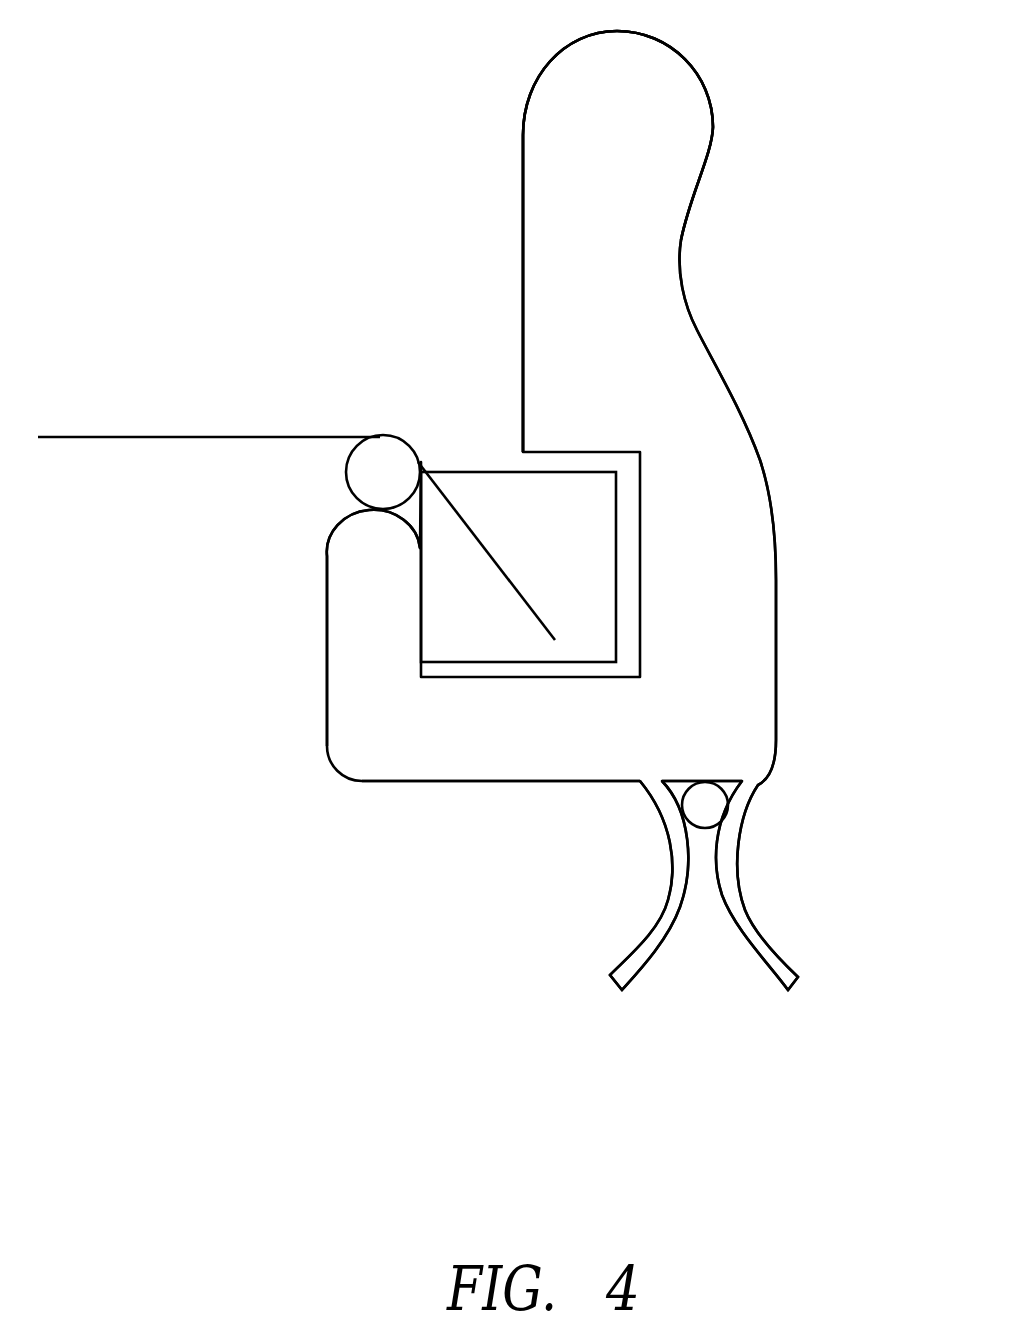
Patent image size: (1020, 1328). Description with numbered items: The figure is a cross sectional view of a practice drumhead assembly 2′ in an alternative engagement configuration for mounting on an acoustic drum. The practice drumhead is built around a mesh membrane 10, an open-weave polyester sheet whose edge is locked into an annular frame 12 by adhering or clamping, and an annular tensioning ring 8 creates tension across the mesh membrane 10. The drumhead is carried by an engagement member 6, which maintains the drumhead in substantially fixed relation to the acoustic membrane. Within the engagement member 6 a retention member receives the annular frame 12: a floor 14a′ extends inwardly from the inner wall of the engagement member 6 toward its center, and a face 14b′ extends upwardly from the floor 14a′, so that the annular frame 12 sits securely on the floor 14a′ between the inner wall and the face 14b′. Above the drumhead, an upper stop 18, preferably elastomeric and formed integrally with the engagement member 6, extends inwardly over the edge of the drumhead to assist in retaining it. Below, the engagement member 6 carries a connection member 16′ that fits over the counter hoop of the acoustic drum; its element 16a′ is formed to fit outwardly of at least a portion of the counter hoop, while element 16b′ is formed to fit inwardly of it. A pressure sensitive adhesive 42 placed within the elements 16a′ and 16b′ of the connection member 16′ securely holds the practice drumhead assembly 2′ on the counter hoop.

The practice drumhead assembly 2′ is at (314, 112).
The engagement member 6 is at (668, 353).
The annular tensioning ring 8 is at (348, 472).
The mesh membrane 10 is at (142, 438).
The annular frame 12 is at (578, 533).
The floor 14a′ is at (461, 757).
The face 14b′ is at (368, 620).
The connection member 16′ is at (707, 958).
The outer element of connection member 16a′ is at (740, 903).
The inner element of connection member 16b′ is at (667, 897).
The upper stop 18 is at (562, 380).
The pressure sensitive adhesive 42 is at (703, 805).